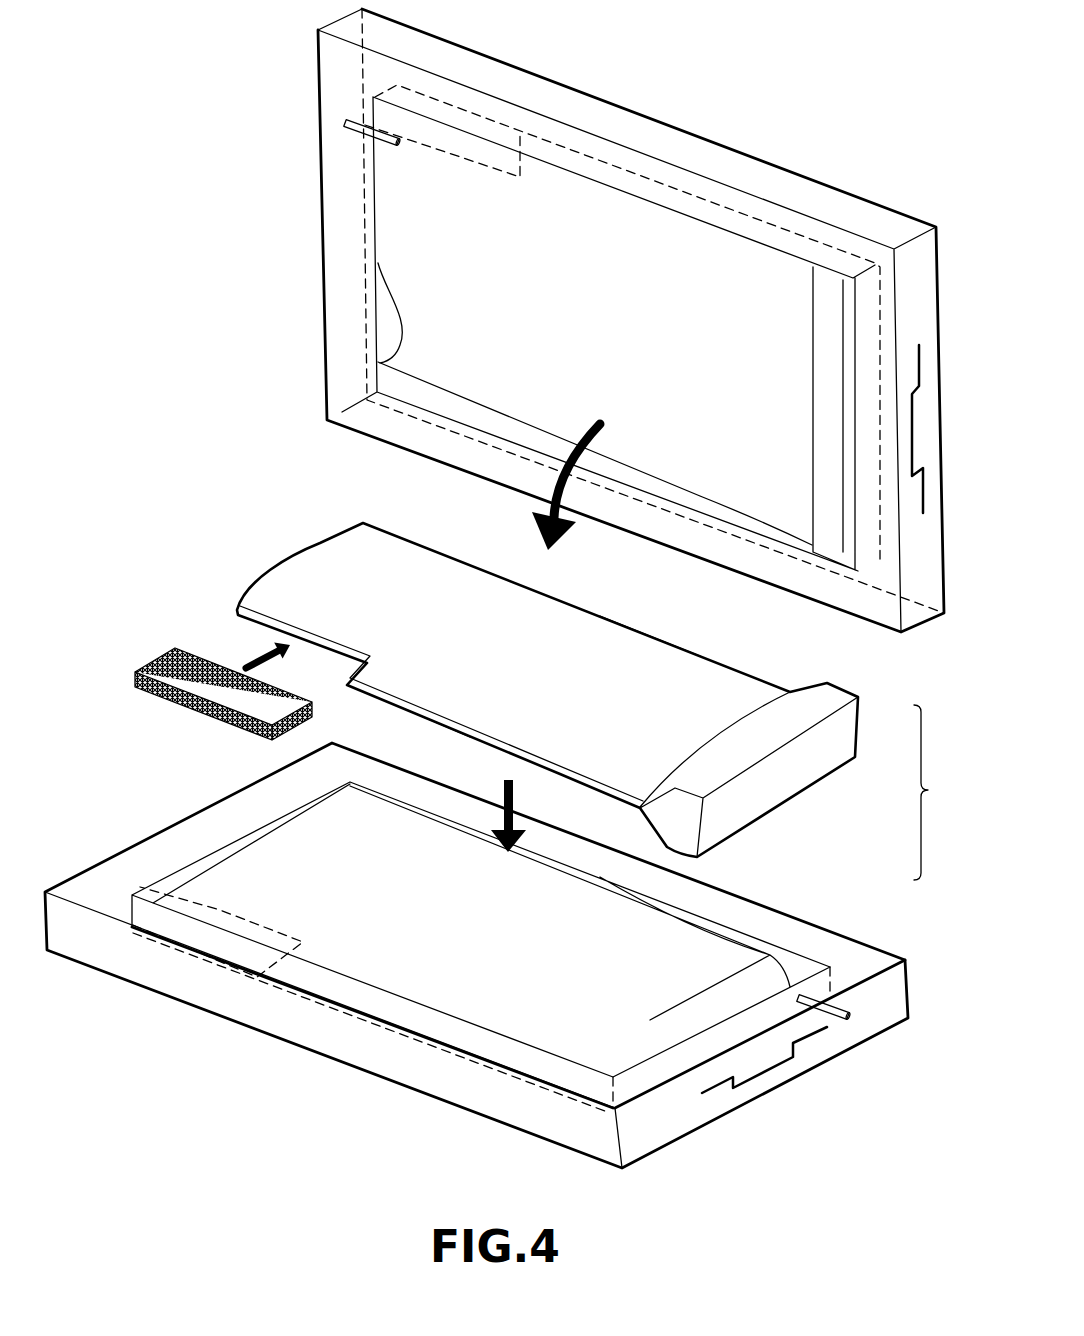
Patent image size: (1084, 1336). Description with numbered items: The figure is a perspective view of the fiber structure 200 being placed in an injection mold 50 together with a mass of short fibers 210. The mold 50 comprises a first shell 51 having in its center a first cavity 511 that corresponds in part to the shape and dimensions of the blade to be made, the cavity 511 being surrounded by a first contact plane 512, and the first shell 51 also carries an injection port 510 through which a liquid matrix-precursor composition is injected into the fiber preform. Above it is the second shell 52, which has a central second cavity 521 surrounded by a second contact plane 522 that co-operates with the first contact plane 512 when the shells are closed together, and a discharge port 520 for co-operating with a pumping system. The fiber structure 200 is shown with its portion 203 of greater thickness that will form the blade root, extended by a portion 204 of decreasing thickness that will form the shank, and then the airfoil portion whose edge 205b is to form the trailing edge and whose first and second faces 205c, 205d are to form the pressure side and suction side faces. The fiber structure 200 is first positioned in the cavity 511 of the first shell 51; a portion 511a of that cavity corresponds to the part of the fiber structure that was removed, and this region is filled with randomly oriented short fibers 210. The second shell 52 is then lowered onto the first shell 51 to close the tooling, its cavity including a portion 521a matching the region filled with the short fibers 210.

The injection mold 50 is at (504, 588).
The first shell 51 is at (476, 955).
The second shell 52 is at (591, 374).
The fiber structure 200 is at (532, 682).
The portion of greater thickness 203 is at (693, 850).
The portion of decreasing thickness 204 is at (640, 808).
The edge 205b is at (648, 635).
The first face 205c is at (423, 723).
The second face 205d is at (667, 680).
The short fibers 210 is at (173, 658).
The injection port 510 is at (838, 1012).
The first cavity 511 is at (278, 880).
The portion of the cavity 511a is at (220, 913).
The first contact plane 512 is at (95, 877).
The discharge port 520 is at (353, 127).
The second cavity 521 is at (412, 262).
The portion of the cavity 521a is at (480, 150).
The second contact plane 522 is at (340, 63).